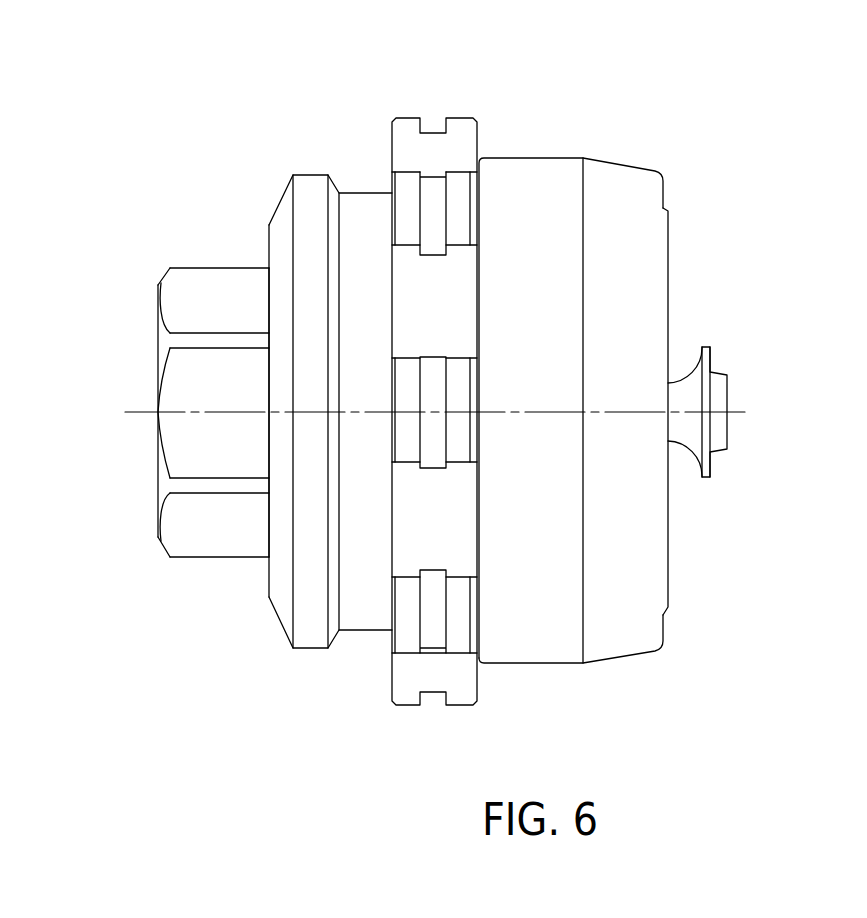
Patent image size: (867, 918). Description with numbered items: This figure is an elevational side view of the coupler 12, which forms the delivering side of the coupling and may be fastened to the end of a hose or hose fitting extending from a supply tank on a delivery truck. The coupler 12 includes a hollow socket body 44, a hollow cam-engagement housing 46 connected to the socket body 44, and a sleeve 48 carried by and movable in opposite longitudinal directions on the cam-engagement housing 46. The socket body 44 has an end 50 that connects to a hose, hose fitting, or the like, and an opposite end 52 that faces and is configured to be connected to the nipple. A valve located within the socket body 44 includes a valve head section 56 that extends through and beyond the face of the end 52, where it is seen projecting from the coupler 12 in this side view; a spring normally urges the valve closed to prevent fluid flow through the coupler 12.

The coupler 12 is at (622, 163).
The socket body 44 is at (190, 556).
The cam-engagement housing 46 is at (313, 650).
The sleeve 48 is at (538, 656).
The end 50 is at (163, 463).
The end 52 is at (666, 628).
The valve head section 56 is at (729, 386).